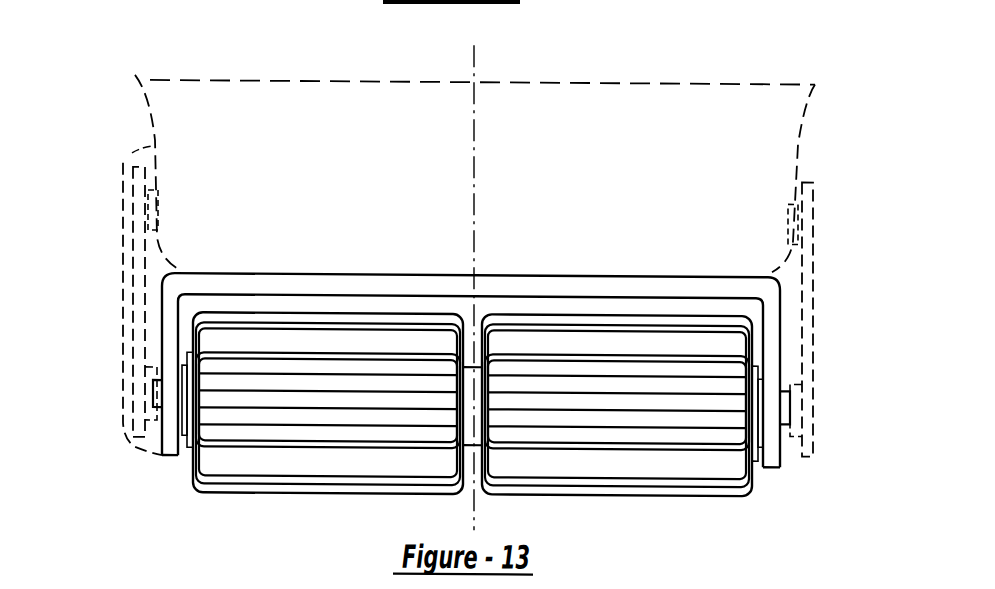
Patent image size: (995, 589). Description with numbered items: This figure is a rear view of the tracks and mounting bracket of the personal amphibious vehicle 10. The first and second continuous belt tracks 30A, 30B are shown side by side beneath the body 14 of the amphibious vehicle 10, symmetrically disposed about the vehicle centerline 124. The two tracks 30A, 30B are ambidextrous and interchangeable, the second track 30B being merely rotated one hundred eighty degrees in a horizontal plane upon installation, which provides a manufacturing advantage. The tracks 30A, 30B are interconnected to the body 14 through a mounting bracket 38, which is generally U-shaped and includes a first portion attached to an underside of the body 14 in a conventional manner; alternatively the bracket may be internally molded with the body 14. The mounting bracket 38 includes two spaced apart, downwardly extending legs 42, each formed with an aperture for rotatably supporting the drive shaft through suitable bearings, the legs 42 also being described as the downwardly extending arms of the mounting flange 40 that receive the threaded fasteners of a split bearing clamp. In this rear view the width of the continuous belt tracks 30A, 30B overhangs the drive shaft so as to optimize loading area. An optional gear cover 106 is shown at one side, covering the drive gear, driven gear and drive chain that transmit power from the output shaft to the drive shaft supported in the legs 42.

The personal amphibious vehicle 10 is at (100, 80).
The body 14 is at (796, 163).
The first continuous belt track 30A is at (196, 494).
The second continuous belt track 30B is at (693, 497).
The mounting bracket 38 is at (560, 275).
The mounting flange 40 is at (352, 275).
The downwardly extending legs 42 is at (160, 326).
The gear cover 106 is at (124, 163).
The vehicle centerline 124 is at (478, 108).